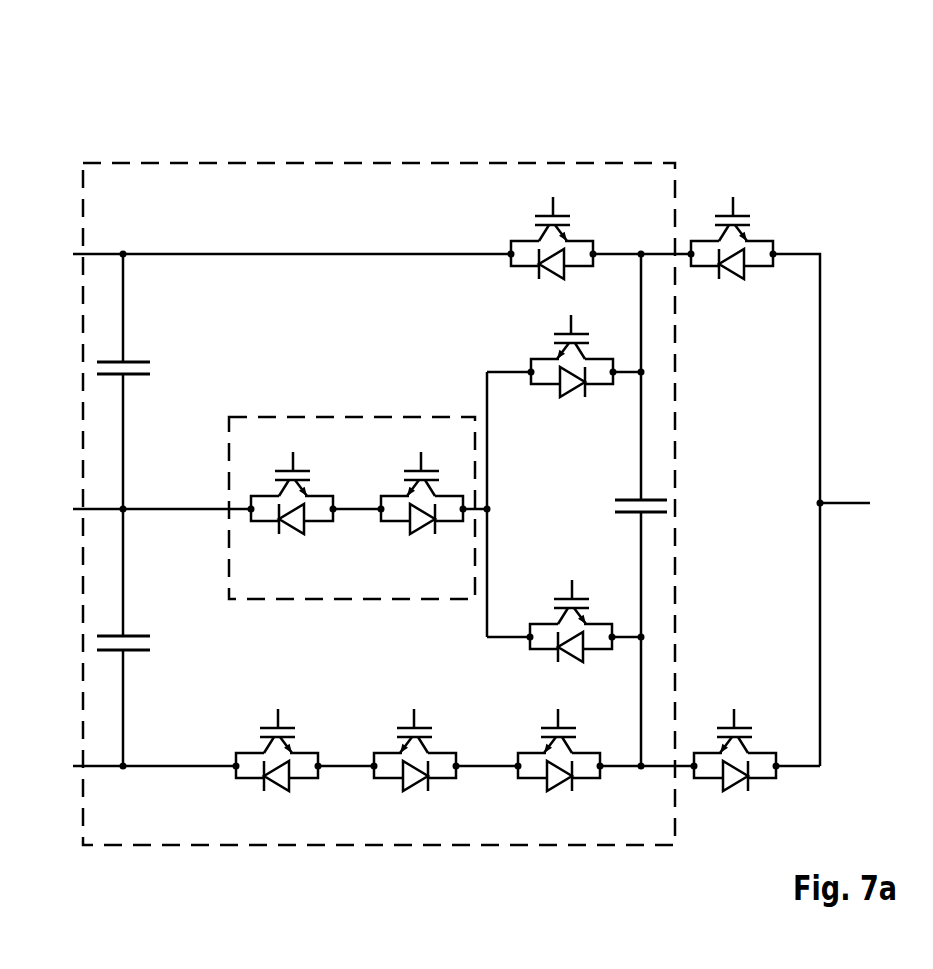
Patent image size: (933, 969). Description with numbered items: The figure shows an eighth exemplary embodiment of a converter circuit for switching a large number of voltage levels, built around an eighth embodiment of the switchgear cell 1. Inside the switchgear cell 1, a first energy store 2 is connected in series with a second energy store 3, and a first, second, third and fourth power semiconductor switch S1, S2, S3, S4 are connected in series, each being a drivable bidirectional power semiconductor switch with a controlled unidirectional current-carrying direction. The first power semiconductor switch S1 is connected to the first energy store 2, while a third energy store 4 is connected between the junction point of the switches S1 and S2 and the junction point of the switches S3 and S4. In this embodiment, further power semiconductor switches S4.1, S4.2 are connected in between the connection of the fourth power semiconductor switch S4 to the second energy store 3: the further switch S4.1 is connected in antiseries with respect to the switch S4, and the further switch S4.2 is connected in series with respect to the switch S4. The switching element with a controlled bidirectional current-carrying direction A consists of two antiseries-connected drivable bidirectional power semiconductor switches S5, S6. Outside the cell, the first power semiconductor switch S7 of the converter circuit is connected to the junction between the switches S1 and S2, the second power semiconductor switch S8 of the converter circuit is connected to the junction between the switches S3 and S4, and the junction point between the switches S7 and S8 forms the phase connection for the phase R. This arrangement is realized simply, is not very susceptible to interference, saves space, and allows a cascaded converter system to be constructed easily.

The switchgear cell 1 is at (298, 163).
The first energy store 2 is at (112, 362).
The second energy store 3 is at (113, 636).
The third energy store 4 is at (655, 498).
The switching element with a controlled bidirectional current-carrying direction A is at (227, 417).
The phase R is at (857, 505).
The first power semiconductor switch S1 is at (566, 235).
The second power semiconductor switch S2 is at (579, 356).
The third power semiconductor switch S3 is at (578, 621).
The fourth power semiconductor switch S4 is at (562, 764).
The further power semiconductor switch S4.1 is at (287, 764).
The further power semiconductor switch S4.2 is at (425, 764).
The drivable bidirectional power semiconductor switch with a controlled unidirection S5 is at (292, 488).
The drivable bidirectional power semiconductor switch with a controlled unidirection S6 is at (423, 488).
The first power semiconductor switch of the converter circuit S7 is at (746, 235).
The second power semiconductor switch of the converter circuit S8 is at (737, 763).